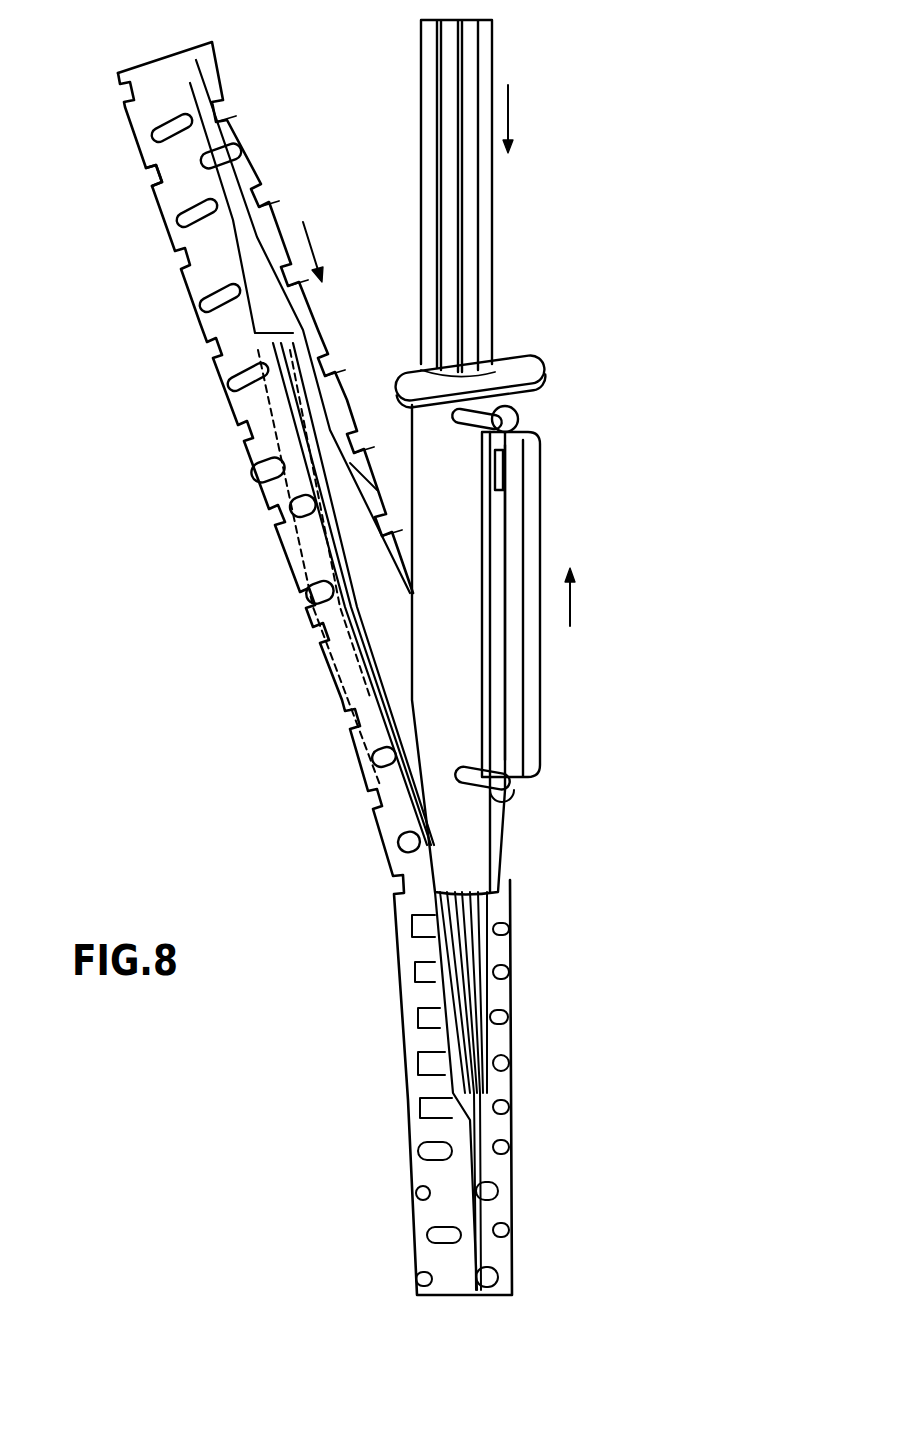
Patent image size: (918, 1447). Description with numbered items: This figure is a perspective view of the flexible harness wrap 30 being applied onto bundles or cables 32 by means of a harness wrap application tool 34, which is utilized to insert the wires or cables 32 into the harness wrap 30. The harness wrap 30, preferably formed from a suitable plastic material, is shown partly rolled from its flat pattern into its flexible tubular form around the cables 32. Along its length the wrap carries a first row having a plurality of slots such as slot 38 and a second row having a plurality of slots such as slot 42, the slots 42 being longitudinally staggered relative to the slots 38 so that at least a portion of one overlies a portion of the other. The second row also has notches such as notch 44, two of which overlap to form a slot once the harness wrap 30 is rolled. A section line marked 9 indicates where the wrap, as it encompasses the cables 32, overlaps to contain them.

The harness wrap 30 is at (160, 348).
The cables 32 is at (485, 228).
The harness wrap application tool 34 is at (565, 515).
The slot 38 is at (262, 195).
The slot 42 is at (160, 178).
The notch 44 is at (240, 150).
The section line of FIG. 9 is at (355, 1102).